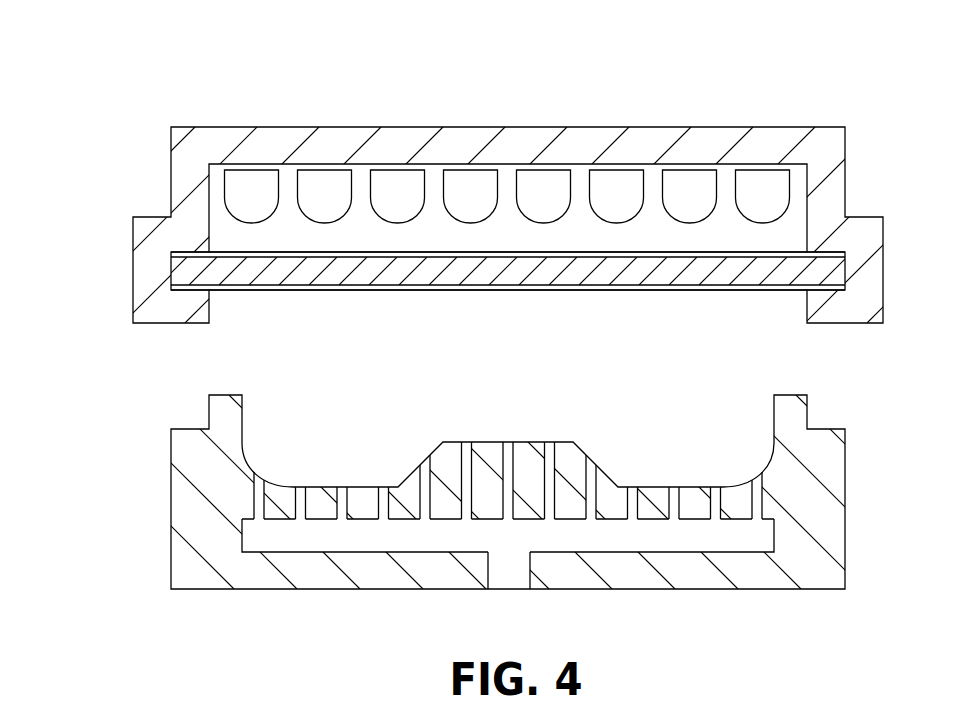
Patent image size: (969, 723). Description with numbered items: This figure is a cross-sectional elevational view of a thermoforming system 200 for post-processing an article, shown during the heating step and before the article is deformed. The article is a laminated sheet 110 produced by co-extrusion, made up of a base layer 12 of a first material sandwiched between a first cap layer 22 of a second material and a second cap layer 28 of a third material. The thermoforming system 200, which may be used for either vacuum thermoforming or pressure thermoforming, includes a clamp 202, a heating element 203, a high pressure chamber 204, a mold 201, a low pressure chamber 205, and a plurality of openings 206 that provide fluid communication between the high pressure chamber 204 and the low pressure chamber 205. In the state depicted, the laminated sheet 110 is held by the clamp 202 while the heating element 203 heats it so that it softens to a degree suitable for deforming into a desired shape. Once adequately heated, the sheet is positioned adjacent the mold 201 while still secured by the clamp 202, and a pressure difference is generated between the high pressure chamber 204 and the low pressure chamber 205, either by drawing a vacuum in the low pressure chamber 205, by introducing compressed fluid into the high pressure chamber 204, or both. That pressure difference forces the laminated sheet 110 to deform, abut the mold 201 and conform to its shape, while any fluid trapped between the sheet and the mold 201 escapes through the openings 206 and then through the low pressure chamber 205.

The thermoforming system 200 is at (164, 99).
The clamp 202 is at (153, 235).
The heating element 203 is at (332, 192).
The high pressure chamber 204 is at (485, 242).
The first cap layer 22 is at (568, 255).
The second cap layer 28 is at (575, 291).
The base layer 12 is at (503, 290).
The laminated sheet 110 is at (375, 272).
The mold 201 is at (484, 489).
The low pressure chamber 205 is at (485, 542).
The openings 206 is at (596, 464).